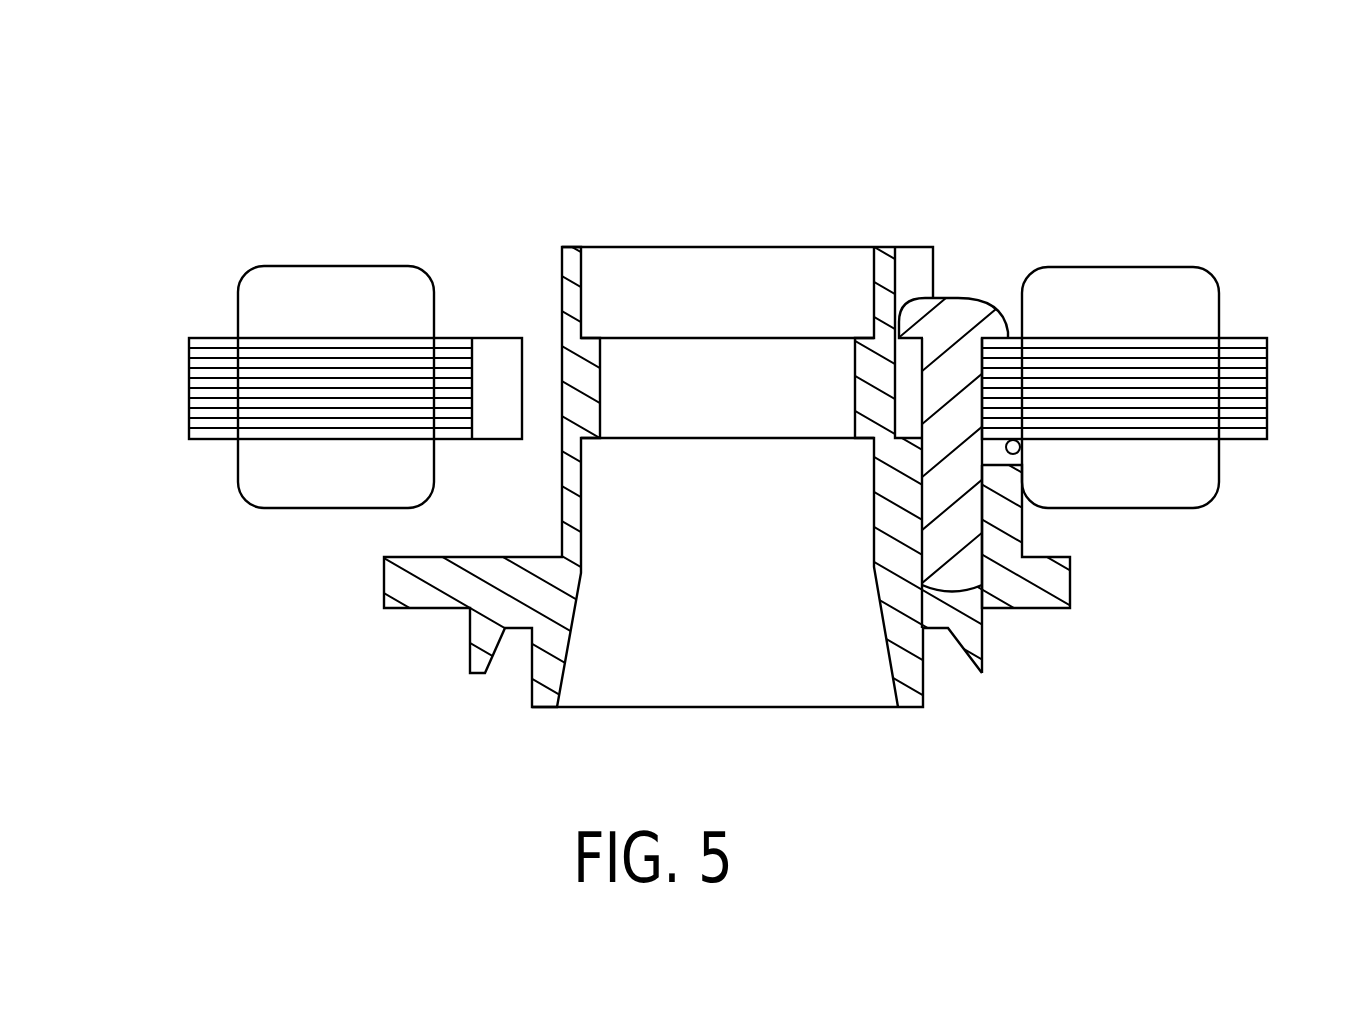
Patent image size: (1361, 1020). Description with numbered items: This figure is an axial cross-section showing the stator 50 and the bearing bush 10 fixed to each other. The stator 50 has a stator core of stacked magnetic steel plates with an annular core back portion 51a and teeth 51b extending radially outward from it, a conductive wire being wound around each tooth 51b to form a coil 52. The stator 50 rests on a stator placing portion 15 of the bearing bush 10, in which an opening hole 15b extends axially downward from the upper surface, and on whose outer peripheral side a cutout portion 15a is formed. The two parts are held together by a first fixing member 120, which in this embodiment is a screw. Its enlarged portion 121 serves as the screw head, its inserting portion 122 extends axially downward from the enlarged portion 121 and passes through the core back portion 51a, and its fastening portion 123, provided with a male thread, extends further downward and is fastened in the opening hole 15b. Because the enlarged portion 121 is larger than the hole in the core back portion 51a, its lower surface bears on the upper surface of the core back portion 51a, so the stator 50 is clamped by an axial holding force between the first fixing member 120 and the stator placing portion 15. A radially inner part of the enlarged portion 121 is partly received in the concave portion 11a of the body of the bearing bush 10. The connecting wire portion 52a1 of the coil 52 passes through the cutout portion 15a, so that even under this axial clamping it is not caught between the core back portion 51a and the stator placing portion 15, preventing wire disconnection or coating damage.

The bearing bush 10 is at (545, 277).
The concave portion 11a is at (908, 270).
The stator placing portion 15 is at (915, 440).
The cutout portion 15a is at (998, 458).
The opening hole 15b is at (983, 493).
The stator 50 is at (313, 257).
The core back portion 51a is at (453, 367).
The teeth 51b is at (229, 367).
The coil 52 is at (268, 485).
The connecting wire portion 52a1 is at (1020, 449).
The first fixing member 120 is at (962, 290).
The enlarged portion 121 is at (940, 312).
The inserting portion 122 is at (955, 403).
The fastening portion 123 is at (955, 517).